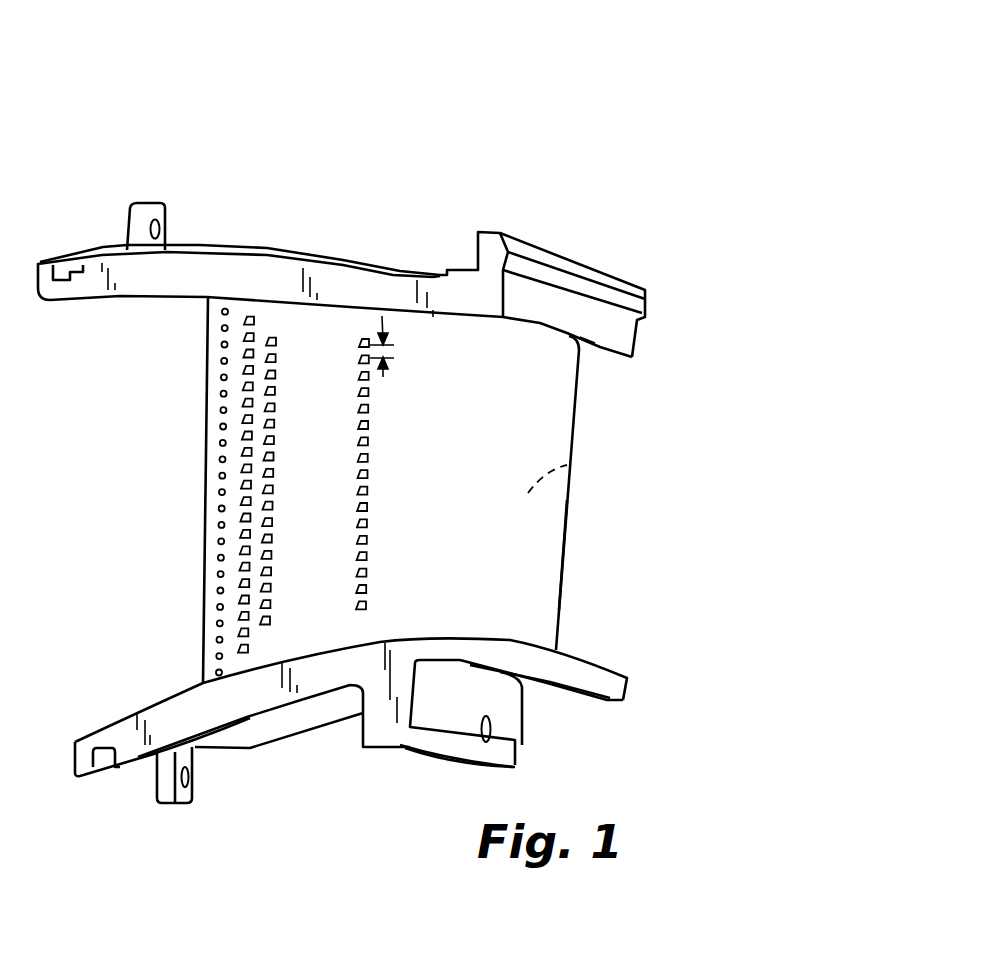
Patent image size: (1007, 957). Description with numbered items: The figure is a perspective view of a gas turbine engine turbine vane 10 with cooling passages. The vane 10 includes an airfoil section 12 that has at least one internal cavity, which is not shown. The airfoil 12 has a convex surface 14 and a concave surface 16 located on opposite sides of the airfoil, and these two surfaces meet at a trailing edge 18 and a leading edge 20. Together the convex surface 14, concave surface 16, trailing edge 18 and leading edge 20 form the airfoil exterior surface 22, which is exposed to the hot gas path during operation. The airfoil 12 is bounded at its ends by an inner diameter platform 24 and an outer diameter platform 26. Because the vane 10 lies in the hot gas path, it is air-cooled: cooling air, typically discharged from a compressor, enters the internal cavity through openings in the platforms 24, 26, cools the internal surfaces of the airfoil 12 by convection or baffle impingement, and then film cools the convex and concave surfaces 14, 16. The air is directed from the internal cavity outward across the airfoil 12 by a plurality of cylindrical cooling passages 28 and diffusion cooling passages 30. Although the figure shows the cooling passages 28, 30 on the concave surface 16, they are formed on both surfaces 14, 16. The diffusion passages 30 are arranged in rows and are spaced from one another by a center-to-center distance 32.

The turbine vane 10 is at (603, 182).
The airfoil section 12 is at (208, 428).
The convex surface 14 is at (565, 467).
The concave surface 16 is at (528, 557).
The trailing edge 18 is at (578, 402).
The leading edge 20 is at (207, 362).
The airfoil exterior surface 22 is at (502, 451).
The inner diameter platform 24 is at (565, 670).
The outer diameter platform 26 is at (617, 317).
The cylindrical cooling passages 28 is at (218, 542).
The diffusion cooling passages 30 is at (358, 578).
The center-to-center distance 32 is at (383, 377).